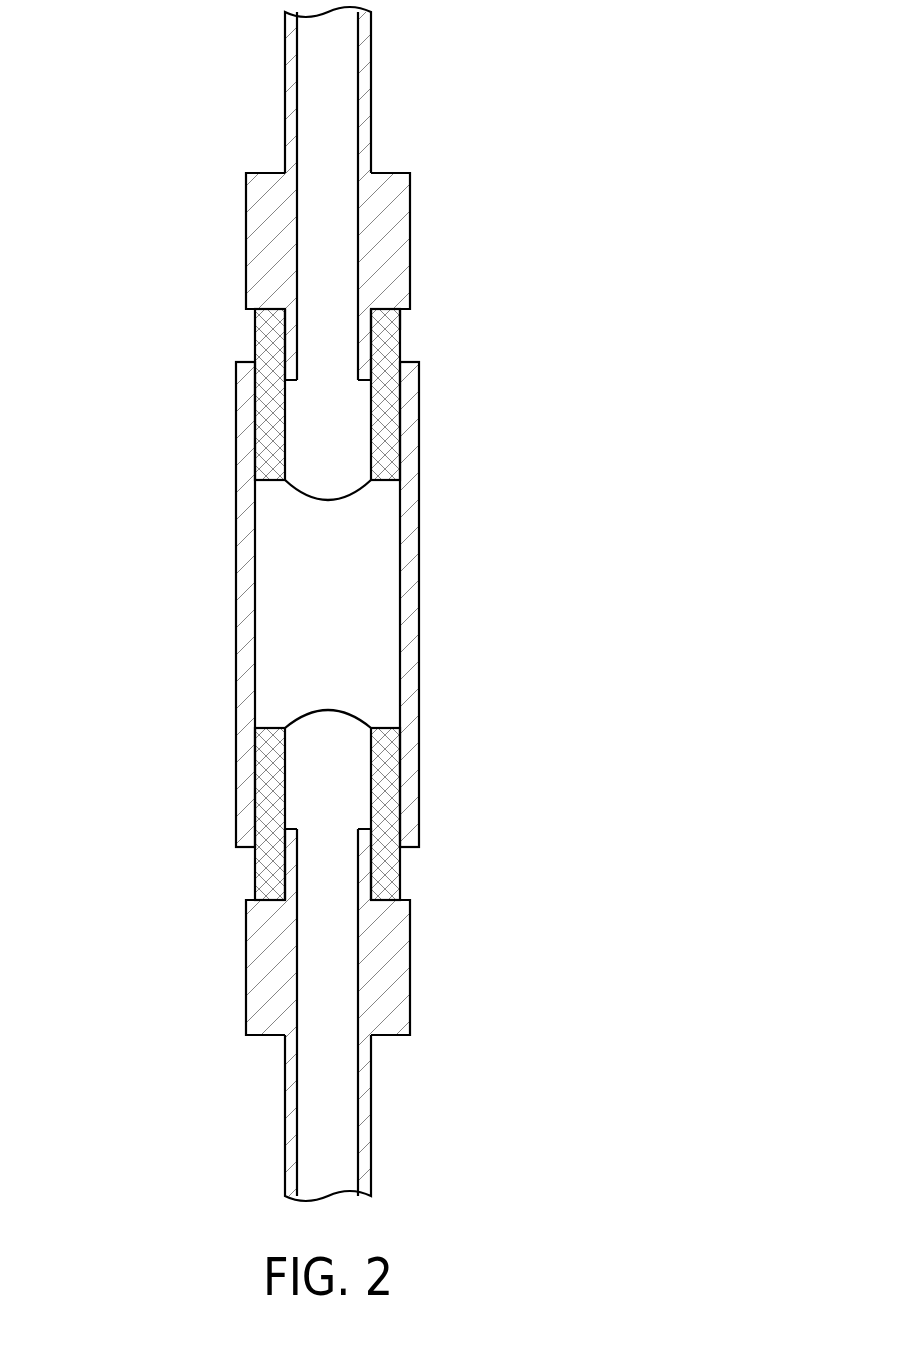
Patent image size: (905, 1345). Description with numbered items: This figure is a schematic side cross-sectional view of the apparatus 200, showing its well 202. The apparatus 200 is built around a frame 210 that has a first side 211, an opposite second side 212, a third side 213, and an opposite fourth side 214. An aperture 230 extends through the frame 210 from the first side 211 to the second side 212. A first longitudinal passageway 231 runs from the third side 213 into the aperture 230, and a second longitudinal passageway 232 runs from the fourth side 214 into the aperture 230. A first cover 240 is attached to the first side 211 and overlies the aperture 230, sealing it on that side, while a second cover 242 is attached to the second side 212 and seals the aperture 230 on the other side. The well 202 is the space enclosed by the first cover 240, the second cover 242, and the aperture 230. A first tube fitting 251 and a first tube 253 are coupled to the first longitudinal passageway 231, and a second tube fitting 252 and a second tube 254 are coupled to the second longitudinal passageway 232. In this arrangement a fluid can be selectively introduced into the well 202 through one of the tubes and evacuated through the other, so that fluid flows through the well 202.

The apparatus 200 is at (520, 98).
The well 202 is at (430, 568).
The frame 210 is at (418, 333).
The first side 211 is at (400, 350).
The second side 212 is at (255, 338).
The third side 213 is at (388, 900).
The fourth side 214 is at (383, 308).
The aperture 230 is at (355, 650).
The first longitudinal passageway 231 is at (327, 830).
The second longitudinal passageway 232 is at (325, 374).
The first cover 240 is at (420, 620).
The second cover 242 is at (236, 602).
The first tube fitting 251 is at (410, 972).
The second tube fitting 252 is at (246, 242).
The first tube 253 is at (371, 1103).
The second tube 254 is at (366, 82).